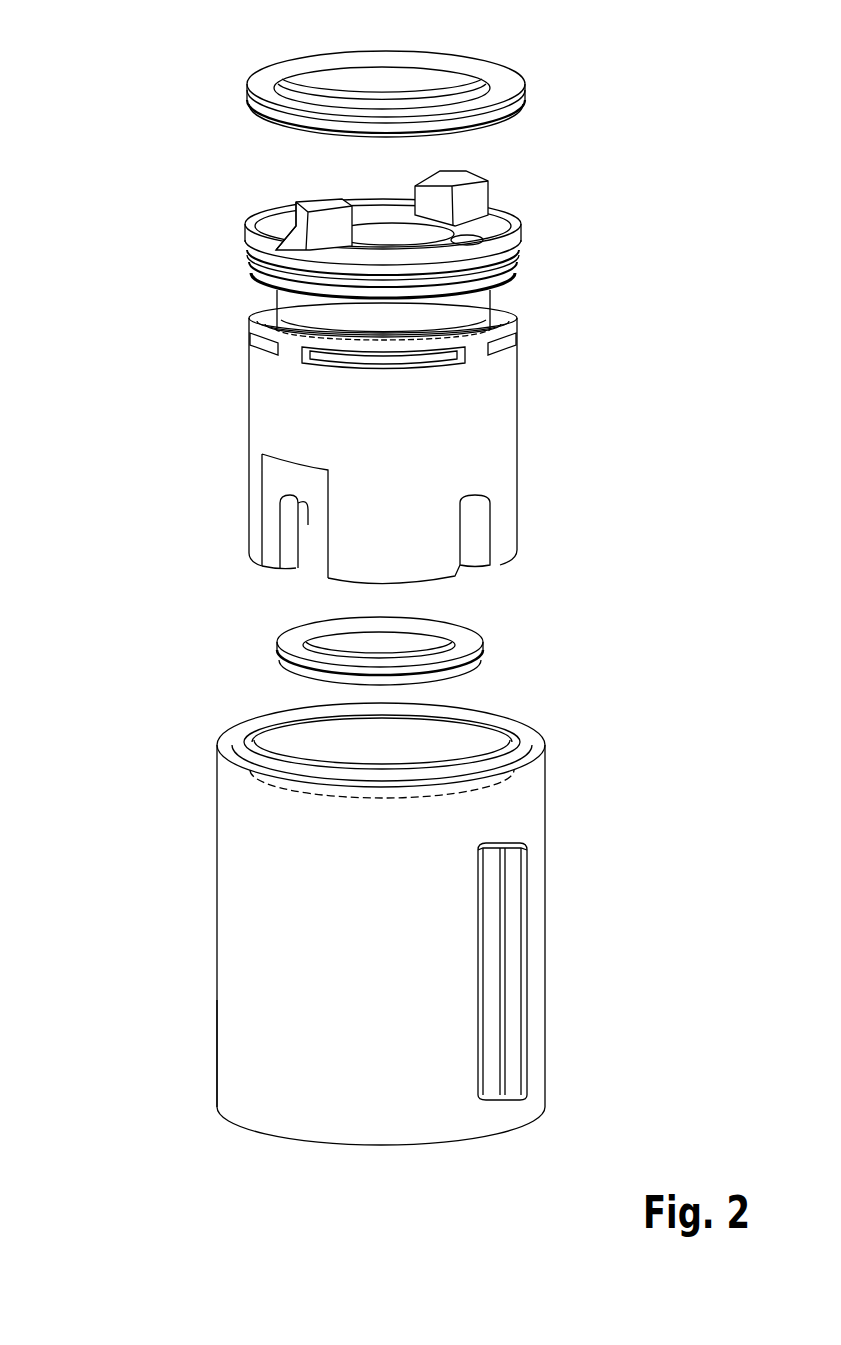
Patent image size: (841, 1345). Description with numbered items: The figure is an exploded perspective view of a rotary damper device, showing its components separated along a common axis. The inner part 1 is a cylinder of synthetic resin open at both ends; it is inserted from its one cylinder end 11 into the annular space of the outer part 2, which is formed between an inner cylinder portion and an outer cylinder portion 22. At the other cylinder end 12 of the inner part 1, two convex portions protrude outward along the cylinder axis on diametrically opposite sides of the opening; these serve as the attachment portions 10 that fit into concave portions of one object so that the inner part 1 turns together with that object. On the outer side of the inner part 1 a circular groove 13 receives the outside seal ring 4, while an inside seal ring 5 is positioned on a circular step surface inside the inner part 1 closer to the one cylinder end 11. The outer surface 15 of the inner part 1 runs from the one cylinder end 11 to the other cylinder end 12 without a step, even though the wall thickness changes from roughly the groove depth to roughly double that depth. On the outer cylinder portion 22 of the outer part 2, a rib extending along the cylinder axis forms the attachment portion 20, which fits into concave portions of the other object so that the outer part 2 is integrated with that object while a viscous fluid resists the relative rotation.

The inner part 1 is at (249, 382).
The outer part 2 is at (243, 903).
The outside seal ring 4 is at (270, 78).
The inside seal ring 5 is at (483, 643).
The attachment portions 10 is at (318, 200).
The one cylinder end 11 is at (500, 563).
The other cylinder end 12 is at (497, 228).
The circular groove 13 is at (470, 303).
The outer surface 15 is at (270, 434).
The attachment portion 20 is at (515, 1023).
The outer cylinder portion 22 is at (236, 1018).